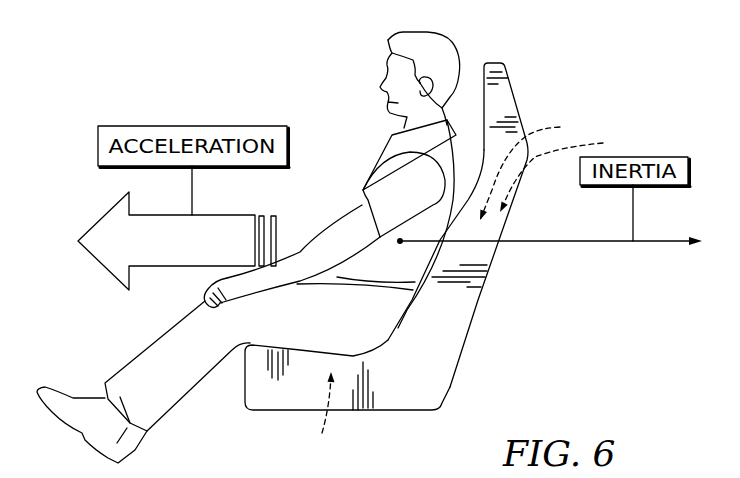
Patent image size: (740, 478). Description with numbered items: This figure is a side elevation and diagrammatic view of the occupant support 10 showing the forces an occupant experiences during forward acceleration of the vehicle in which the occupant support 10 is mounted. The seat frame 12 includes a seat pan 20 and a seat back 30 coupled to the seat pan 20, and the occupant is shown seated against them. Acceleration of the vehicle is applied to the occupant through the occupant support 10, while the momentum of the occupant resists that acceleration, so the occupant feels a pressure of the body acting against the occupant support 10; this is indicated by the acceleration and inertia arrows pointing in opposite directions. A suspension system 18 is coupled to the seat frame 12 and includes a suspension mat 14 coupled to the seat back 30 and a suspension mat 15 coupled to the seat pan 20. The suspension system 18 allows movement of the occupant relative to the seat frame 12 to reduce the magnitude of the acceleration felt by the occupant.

The occupant support 10 is at (590, 97).
The seat frame 12 is at (505, 45).
The suspension mat 14 is at (533, 167).
The suspension mat 15 is at (314, 417).
The suspension system 18 is at (566, 171).
The seat pan 20 is at (375, 380).
The seat back 30 is at (505, 290).